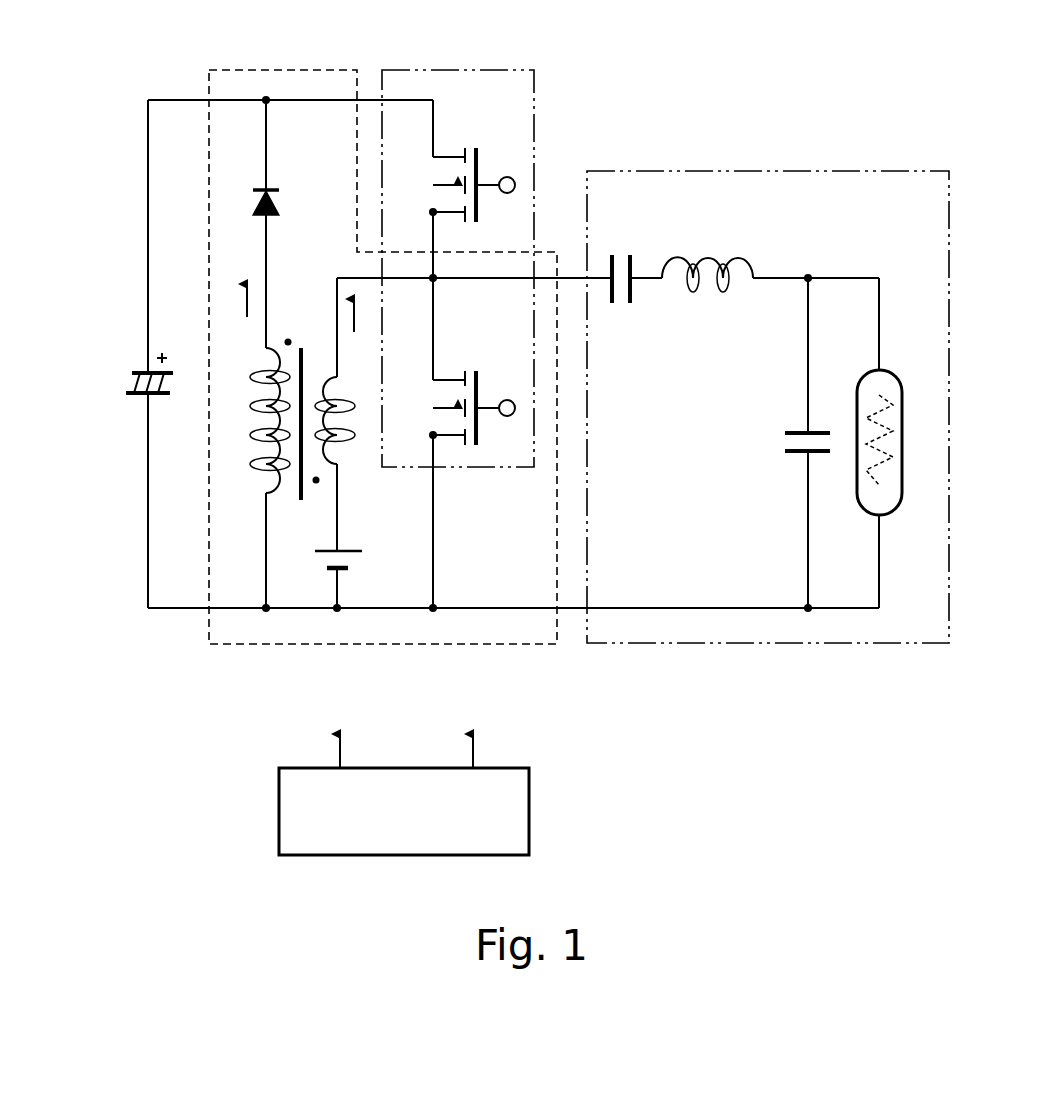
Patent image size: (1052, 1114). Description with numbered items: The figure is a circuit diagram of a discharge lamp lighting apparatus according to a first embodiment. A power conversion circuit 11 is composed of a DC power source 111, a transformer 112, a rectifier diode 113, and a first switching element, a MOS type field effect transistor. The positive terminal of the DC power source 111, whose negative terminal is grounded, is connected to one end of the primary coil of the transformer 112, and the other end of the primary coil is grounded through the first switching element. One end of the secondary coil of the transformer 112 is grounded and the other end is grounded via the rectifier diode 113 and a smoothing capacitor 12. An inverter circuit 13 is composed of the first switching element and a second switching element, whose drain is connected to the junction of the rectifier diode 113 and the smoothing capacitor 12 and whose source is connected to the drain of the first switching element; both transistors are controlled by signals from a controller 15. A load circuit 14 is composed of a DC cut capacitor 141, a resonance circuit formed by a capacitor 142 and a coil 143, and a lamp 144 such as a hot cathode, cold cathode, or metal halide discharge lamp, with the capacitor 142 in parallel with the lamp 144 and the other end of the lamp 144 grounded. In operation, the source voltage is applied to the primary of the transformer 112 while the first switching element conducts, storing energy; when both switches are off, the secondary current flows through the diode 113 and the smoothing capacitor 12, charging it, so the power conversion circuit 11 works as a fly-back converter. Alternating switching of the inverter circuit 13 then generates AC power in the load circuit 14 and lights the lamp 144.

The power conversion circuit 11 is at (289, 70).
The DC power source 111 is at (349, 556).
The transformer 112 is at (302, 340).
The rectifier diode 113 is at (281, 206).
The smoothing capacitor 12 is at (125, 383).
The inverter circuit 13 is at (450, 70).
The load circuit 14 is at (778, 172).
The DC cut capacitor 141 is at (620, 255).
The capacitor 142 is at (797, 430).
The coil 143 is at (712, 258).
The lamp 144 is at (903, 376).
The controller 15 is at (530, 808).